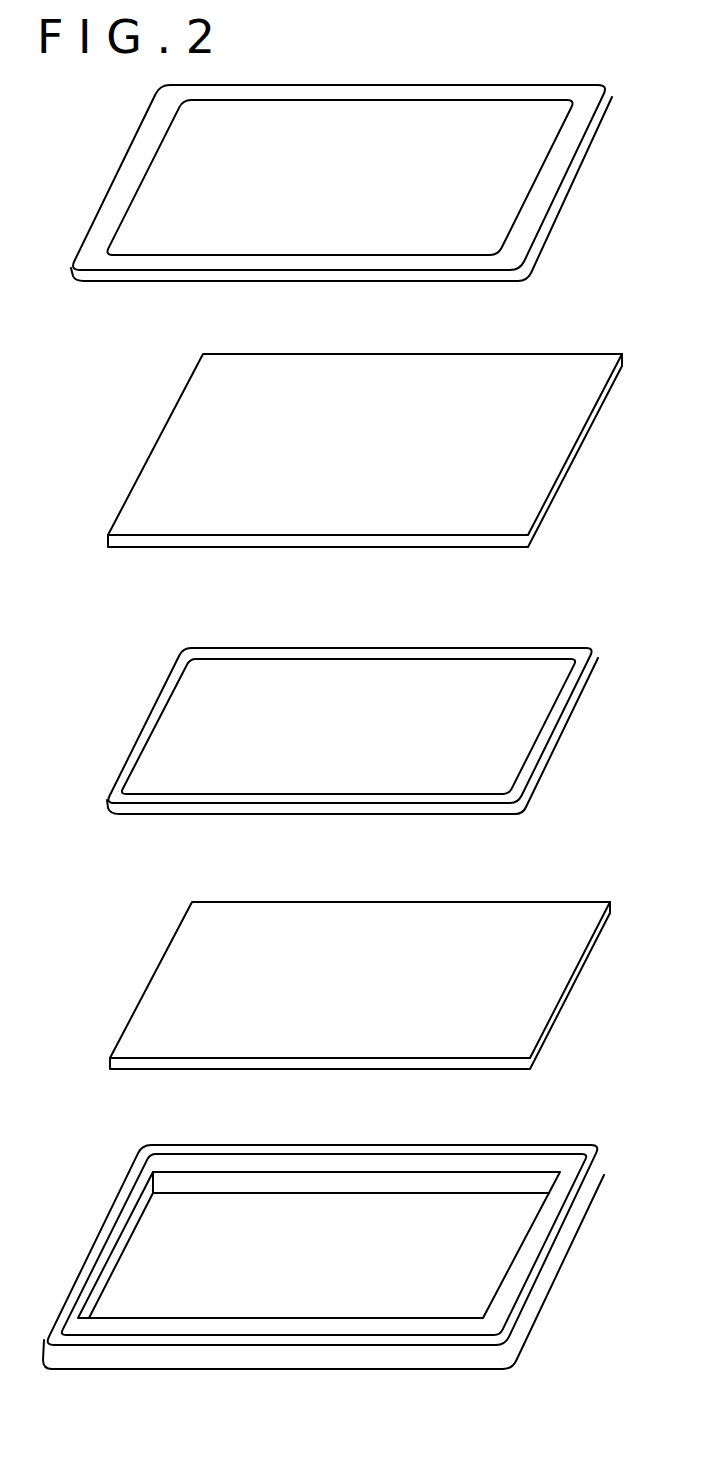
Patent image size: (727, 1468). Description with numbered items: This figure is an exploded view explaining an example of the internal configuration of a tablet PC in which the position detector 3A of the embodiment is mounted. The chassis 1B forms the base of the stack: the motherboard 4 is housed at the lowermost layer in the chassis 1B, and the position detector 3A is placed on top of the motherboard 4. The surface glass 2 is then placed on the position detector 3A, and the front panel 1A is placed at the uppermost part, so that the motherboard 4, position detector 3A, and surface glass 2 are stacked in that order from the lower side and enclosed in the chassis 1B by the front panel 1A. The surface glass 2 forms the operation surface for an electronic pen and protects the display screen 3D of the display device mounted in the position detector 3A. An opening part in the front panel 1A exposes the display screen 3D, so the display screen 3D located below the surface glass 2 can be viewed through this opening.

The front panel 1A is at (578, 177).
The surface glass 2 is at (580, 423).
The position detector 3A is at (375, 711).
The display screen 3D is at (505, 665).
The motherboard 4 is at (587, 962).
The chassis 1B is at (588, 1208).